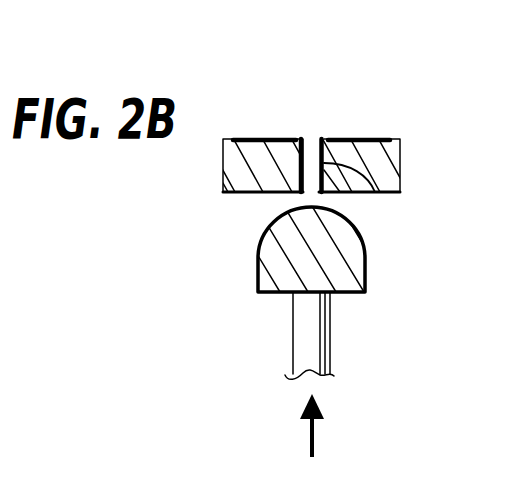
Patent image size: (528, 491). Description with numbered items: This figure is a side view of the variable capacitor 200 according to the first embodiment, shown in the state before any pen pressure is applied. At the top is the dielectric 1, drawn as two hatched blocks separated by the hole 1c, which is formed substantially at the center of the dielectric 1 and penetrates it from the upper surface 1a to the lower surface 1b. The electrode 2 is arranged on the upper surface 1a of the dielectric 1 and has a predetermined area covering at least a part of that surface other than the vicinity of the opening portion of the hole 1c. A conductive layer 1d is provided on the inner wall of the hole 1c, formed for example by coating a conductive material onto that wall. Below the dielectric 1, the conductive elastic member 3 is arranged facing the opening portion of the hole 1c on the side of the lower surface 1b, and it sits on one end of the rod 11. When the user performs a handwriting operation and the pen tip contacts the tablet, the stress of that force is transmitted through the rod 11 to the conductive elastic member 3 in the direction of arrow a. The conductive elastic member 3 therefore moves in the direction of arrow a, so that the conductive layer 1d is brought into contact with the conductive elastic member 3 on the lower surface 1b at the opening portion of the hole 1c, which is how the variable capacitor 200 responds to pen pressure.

The variable capacitor 200 is at (512, 56).
The dielectric 1 is at (400, 161).
The upper surface 1a is at (226, 139).
The lower surface 1b is at (232, 193).
The hole 1c is at (311, 147).
The conductive layer 1d is at (372, 187).
The electrode 2 is at (362, 139).
The conductive elastic member 3 is at (357, 261).
The rod 11 is at (331, 333).
The arrow a is at (314, 438).